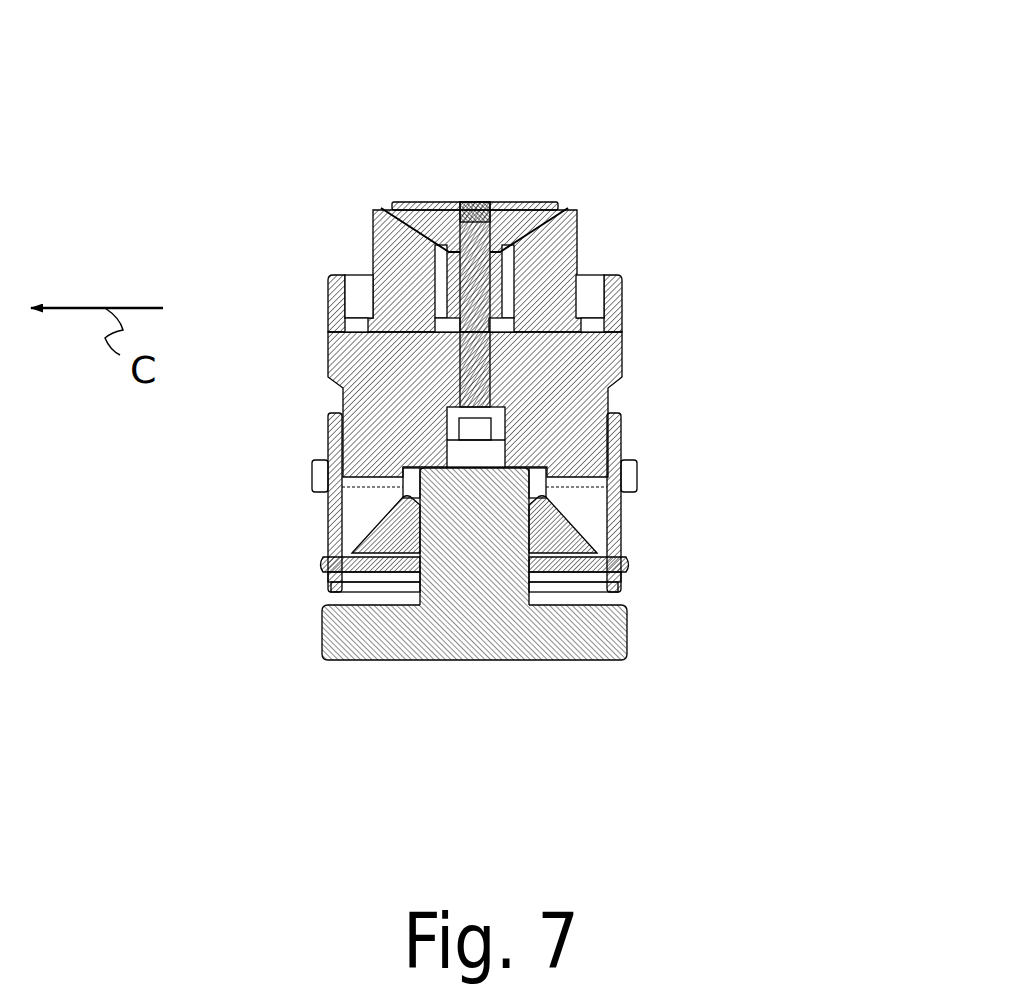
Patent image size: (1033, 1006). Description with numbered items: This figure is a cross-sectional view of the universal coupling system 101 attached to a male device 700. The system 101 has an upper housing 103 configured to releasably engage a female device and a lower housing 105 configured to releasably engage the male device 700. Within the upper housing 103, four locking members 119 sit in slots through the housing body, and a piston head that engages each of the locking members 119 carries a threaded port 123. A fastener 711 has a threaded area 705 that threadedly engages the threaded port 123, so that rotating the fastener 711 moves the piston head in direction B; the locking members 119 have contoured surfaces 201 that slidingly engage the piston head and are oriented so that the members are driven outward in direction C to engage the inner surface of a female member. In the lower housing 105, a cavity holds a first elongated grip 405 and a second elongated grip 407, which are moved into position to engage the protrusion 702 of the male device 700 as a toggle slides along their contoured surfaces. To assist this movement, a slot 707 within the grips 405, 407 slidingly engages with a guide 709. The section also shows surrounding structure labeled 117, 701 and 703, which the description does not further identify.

The universal coupling system 101 is at (228, 172).
The upper housing 103 is at (788, 253).
The lower housing 105 is at (238, 577).
The lower housing 117 is at (595, 278).
The locking members 119 is at (573, 207).
The threaded port 123 is at (463, 201).
The contoured surfaces 201 is at (413, 217).
The first elongated grip 405 is at (567, 522).
The second elongated grip 407 is at (380, 522).
The male device 700 is at (627, 628).
The conical surface 701 is at (537, 240).
The protrusion 702 is at (424, 545).
The flange pocket 703 is at (353, 298).
The threaded area 705 is at (493, 238).
The slot 707 is at (596, 552).
The guide 709 is at (625, 565).
The fastener 711 is at (463, 374).